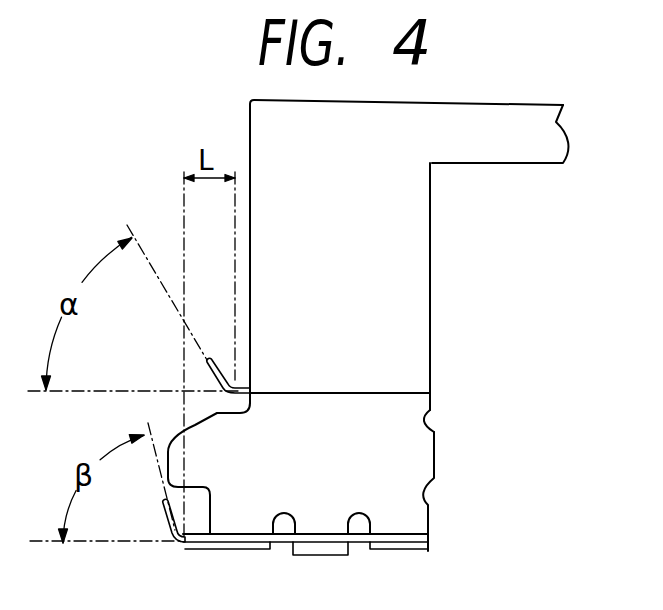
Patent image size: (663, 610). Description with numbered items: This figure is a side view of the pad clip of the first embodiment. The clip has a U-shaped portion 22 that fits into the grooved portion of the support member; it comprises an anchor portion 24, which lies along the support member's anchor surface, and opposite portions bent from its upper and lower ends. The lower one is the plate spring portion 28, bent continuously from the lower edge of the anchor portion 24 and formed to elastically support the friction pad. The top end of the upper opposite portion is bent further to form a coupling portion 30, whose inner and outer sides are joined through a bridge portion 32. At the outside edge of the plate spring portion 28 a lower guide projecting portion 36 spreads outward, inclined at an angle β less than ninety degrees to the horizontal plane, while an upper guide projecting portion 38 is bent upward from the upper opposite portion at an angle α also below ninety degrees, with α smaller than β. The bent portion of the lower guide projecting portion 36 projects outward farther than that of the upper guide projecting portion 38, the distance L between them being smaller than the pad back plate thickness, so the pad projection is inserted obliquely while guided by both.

The U-shaped portion 22 is at (420, 412).
The anchor portion 24 is at (420, 466).
The plate spring portion 28 is at (408, 530).
The coupling portion 30 is at (424, 284).
The bridge portion 32 is at (528, 158).
The lower guide projecting portion 36 is at (167, 522).
The upper guide projecting portion 38 is at (210, 371).